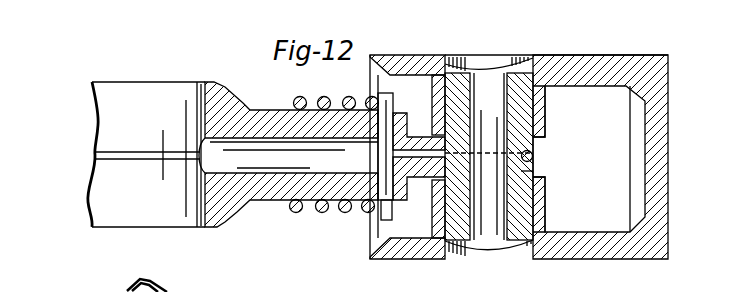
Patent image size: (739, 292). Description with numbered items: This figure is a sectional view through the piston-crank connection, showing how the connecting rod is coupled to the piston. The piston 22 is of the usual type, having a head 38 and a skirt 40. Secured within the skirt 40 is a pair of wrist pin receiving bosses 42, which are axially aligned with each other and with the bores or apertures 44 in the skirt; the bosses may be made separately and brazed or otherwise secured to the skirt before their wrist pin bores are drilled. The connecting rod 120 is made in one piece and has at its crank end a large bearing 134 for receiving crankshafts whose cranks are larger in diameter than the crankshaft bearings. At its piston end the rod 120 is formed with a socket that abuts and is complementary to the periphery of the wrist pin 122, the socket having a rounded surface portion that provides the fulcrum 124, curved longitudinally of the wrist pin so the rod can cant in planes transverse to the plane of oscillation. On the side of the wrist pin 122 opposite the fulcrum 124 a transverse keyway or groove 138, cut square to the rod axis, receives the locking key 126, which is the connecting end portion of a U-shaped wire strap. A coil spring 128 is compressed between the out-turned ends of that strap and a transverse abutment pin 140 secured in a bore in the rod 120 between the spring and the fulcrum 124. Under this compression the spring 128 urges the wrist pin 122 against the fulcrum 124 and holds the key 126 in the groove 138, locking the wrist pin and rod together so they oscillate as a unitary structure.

The piston 22 is at (609, 56).
The head 38 is at (662, 128).
The skirt 40 is at (422, 250).
The wrist pin receiving bosses 42 is at (540, 118).
The bores or apertures 44 is at (469, 70).
The connecting member or rod 120 is at (260, 199).
The connecting member or wrist pin 122 is at (525, 102).
The fulcrum 124 is at (440, 147).
The locking member or key 126 is at (534, 156).
The thrust member or spring 128 is at (300, 97).
The large bearing 134 is at (197, 214).
The transverse keyway or groove 138 is at (533, 171).
The transverse pin 140 is at (381, 213).